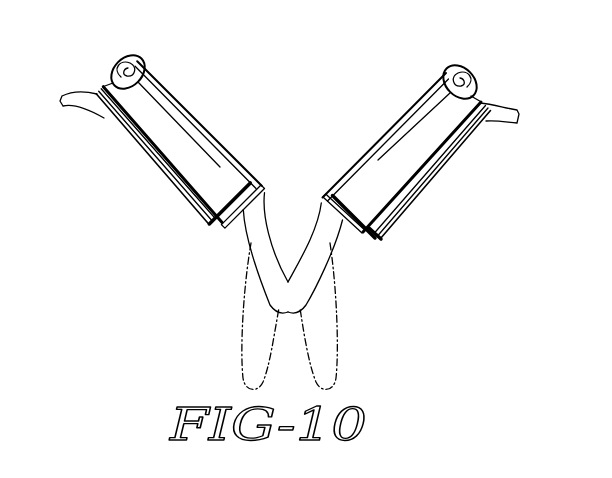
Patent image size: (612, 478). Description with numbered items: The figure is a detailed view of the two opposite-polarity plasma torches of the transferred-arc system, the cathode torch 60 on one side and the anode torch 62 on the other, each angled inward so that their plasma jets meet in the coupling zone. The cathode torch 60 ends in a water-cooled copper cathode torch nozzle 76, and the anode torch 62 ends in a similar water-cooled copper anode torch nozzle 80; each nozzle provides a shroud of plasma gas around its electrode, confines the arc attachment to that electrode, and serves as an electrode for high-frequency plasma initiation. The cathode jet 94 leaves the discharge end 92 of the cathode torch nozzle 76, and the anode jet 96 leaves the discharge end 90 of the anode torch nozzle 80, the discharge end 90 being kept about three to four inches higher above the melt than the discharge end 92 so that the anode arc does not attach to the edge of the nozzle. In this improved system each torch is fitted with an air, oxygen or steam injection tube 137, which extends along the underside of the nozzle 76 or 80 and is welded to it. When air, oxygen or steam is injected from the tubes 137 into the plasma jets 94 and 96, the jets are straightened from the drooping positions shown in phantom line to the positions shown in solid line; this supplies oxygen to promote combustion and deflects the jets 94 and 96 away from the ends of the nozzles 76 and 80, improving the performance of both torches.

The cathode torch 60 is at (183, 116).
The anode torch 62 is at (403, 121).
The cathode torch nozzle 76 is at (207, 137).
The anode torch nozzle 80 is at (387, 140).
The discharge end of anode torch nozzle 90 is at (315, 195).
The discharge end of cathode torch nozzle 92 is at (268, 185).
The cathode plasma jet 94 is at (253, 245).
The anode plasma jet 96 is at (321, 238).
The air, oxygen or steam injection tube 137 is at (158, 172).